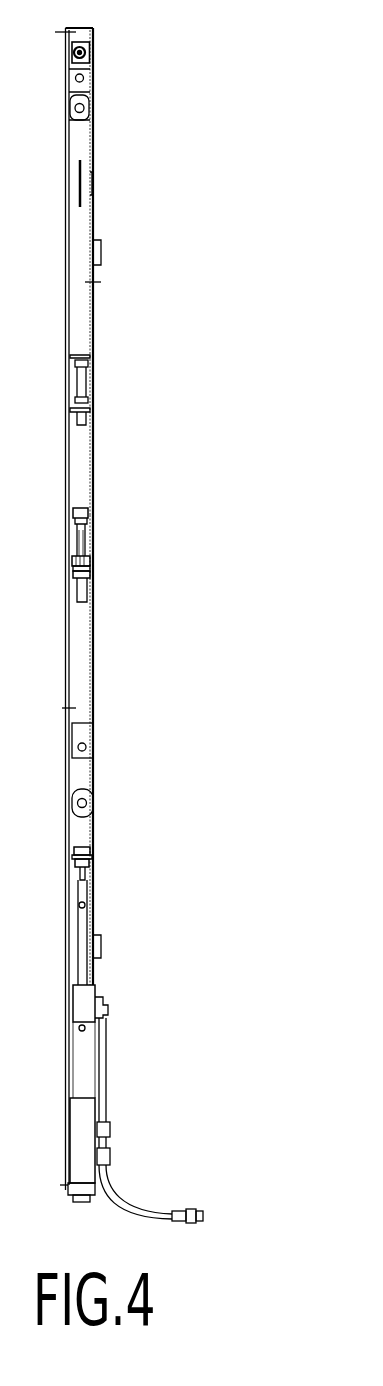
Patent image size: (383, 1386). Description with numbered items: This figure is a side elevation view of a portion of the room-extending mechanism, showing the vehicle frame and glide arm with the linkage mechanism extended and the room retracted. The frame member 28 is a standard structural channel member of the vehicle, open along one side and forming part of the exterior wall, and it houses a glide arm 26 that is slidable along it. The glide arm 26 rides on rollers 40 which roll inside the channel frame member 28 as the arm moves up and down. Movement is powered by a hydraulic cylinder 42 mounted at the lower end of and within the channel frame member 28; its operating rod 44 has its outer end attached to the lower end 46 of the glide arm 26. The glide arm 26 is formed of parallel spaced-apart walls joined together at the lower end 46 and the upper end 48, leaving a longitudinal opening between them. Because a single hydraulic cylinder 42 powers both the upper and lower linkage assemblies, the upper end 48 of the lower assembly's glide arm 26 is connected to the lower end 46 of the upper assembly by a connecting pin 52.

The glide arm 26 is at (93, 310).
The frame member 28 is at (95, 650).
The rollers 40 is at (92, 802).
The hydraulic cylinder 42 is at (87, 1118).
The operating rod 44 is at (80, 968).
The lower end 46 is at (88, 512).
The upper end 48 is at (95, 583).
The connecting pin 52 is at (82, 538).